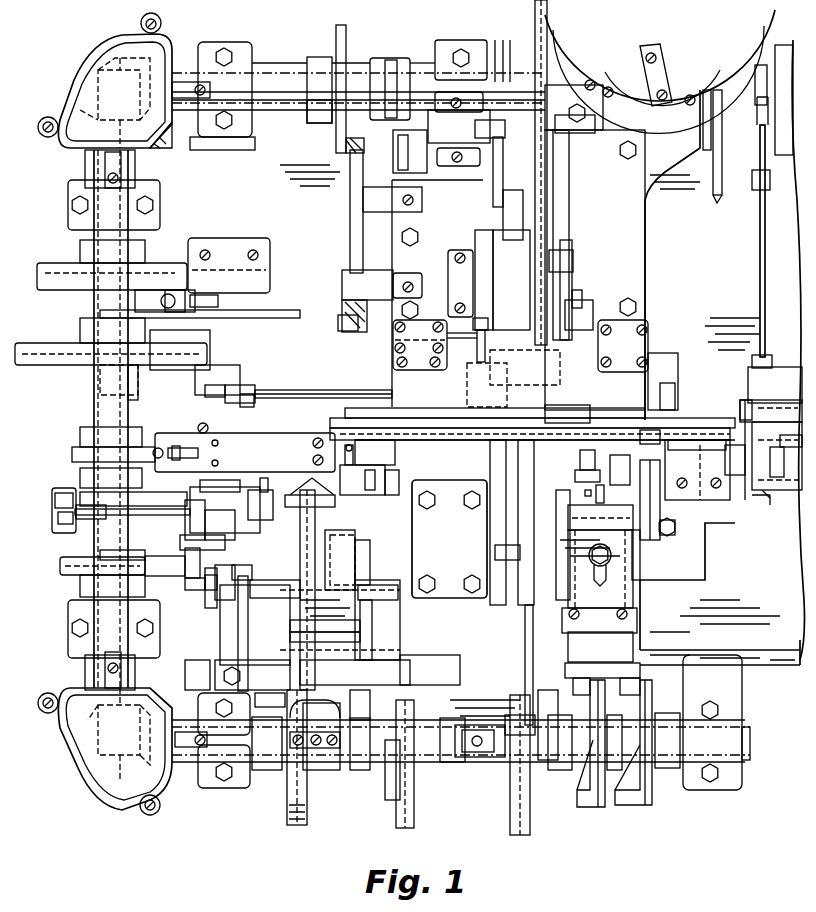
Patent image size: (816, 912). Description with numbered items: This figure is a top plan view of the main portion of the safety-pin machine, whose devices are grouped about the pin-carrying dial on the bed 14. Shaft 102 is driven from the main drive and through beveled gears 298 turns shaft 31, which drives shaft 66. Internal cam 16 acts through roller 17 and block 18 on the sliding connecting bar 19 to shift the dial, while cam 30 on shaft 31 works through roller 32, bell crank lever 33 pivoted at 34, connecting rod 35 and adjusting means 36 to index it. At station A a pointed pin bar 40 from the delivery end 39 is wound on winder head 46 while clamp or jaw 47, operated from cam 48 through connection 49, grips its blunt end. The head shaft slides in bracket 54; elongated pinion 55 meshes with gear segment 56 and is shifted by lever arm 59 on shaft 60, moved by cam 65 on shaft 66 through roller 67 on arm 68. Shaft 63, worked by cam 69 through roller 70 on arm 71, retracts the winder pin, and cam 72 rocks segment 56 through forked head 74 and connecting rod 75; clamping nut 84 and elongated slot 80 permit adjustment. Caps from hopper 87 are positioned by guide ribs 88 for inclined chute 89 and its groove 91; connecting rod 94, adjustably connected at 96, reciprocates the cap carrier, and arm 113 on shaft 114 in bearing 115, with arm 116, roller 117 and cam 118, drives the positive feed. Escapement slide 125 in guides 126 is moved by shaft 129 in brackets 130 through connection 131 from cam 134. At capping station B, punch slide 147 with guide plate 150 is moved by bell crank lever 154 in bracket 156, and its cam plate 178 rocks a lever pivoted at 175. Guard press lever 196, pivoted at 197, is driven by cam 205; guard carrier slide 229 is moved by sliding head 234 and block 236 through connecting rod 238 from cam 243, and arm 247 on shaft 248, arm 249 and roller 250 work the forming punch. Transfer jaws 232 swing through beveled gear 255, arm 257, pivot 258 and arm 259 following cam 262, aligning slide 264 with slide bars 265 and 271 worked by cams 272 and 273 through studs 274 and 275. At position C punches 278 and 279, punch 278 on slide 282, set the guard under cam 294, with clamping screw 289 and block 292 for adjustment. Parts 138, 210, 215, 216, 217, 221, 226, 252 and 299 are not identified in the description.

The bed 14 is at (776, 665).
The internal cam 16 is at (40, 277).
The roller 17 is at (217, 264).
The block 18 is at (162, 310).
The sliding connecting bar 19 is at (312, 310).
The cam 30 is at (48, 364).
The shaft 31 is at (93, 406).
The roller 32 is at (130, 375).
The bell crank lever 33 is at (178, 375).
The pivot 34 is at (245, 385).
The connecting rod 35 is at (325, 392).
The adjusting means 36 is at (239, 381).
The delivery end of pointing mechanism 39 is at (778, 510).
The pin bar 40 is at (742, 512).
The winder head 46 is at (736, 462).
The clamp or jaw 47 is at (742, 405).
The cam 48 is at (780, 70).
The connection 49 is at (760, 260).
The bracket 54 is at (690, 492).
The elongated pinion 55 is at (664, 432).
The gear segment 56 is at (655, 535).
The lever arm 59 is at (610, 478).
The shaft 60 is at (612, 490).
The shaft 63 is at (545, 490).
The cam 65 is at (626, 806).
The shaft 66 is at (580, 760).
The roller 67 is at (618, 734).
The arm 68 is at (640, 672).
The cam 69 is at (583, 808).
The roller 70 is at (563, 736).
The arm 71 is at (550, 723).
The cam 72 is at (512, 808).
The forked head 74 is at (548, 690).
The connecting rod 75 is at (530, 612).
The elongated slot 80 is at (604, 578).
The clamping nut 84 is at (672, 530).
The hopper 87 is at (660, 71).
The guide ribs 88 is at (638, 48).
The inclined chute 89 is at (535, 30).
The groove or guide 91 is at (570, 240).
The connecting rod 94 is at (570, 228).
The adjustable connection 96 is at (583, 125).
The shaft 102 is at (279, 70).
The arm 113 is at (494, 182).
The shaft 114 is at (480, 115).
The bearing 115 is at (462, 167).
The arm 116 is at (412, 173).
The roller 117 is at (405, 190).
The cam 118 is at (396, 78).
The slide 125 is at (478, 356).
The guides 126 is at (424, 328).
The shaft 129 is at (348, 245).
The brackets 130 is at (376, 272).
The connection 131 is at (340, 330).
The cam 134 is at (336, 135).
The stop 138 is at (582, 308).
The slide 147 is at (512, 522).
The adjustable guide plate 150 is at (510, 430).
The bell crank lever 154 is at (532, 505).
The bracket 156 is at (560, 520).
The pivot 175 is at (591, 466).
The cam plate 178 is at (535, 410).
The lever 196 is at (300, 530).
The pivot 197 is at (370, 595).
The cam 205 is at (297, 826).
The rod 210 is at (246, 605).
The bearing 215 is at (248, 655).
The bolt 216 is at (240, 680).
The collar 217 is at (252, 703).
The shaft 221 is at (262, 775).
The link 226 is at (230, 565).
The guard carrier slide 229 is at (310, 492).
The carrier jaws 232 is at (330, 456).
The sliding head 234 is at (230, 500).
The block 236 is at (238, 520).
The adjustable connecting rod 238 is at (138, 512).
The cam 243 is at (68, 495).
The arm 247 is at (360, 622).
The shaft 248 is at (362, 636).
The arm 249 is at (405, 680).
The roller 250 is at (392, 795).
The cam 252 is at (416, 804).
The beveled gear 255 is at (286, 508).
The arm 257 is at (222, 540).
The pivot 258 is at (195, 590).
The arm 259 is at (163, 565).
The cam 262 is at (60, 566).
The slide 264 is at (365, 485).
The slide bar 265 is at (330, 550).
The slide bar 271 is at (370, 565).
The cam 272 is at (332, 772).
The cam 273 is at (348, 772).
The adjustable stud 274 is at (271, 700).
The adjustable stud 275 is at (360, 700).
The guard setting punch 278 is at (367, 479).
The guard setting punch 279 is at (348, 444).
The slide 282 is at (375, 445).
The clamping screw 289 is at (158, 447).
The block 292 is at (180, 467).
The cam 294 is at (72, 457).
The beveled gears 298 is at (105, 80).
The housing cover 299 is at (128, 738).
The station A is at (742, 430).
The station B is at (556, 375).
The position C is at (360, 477).